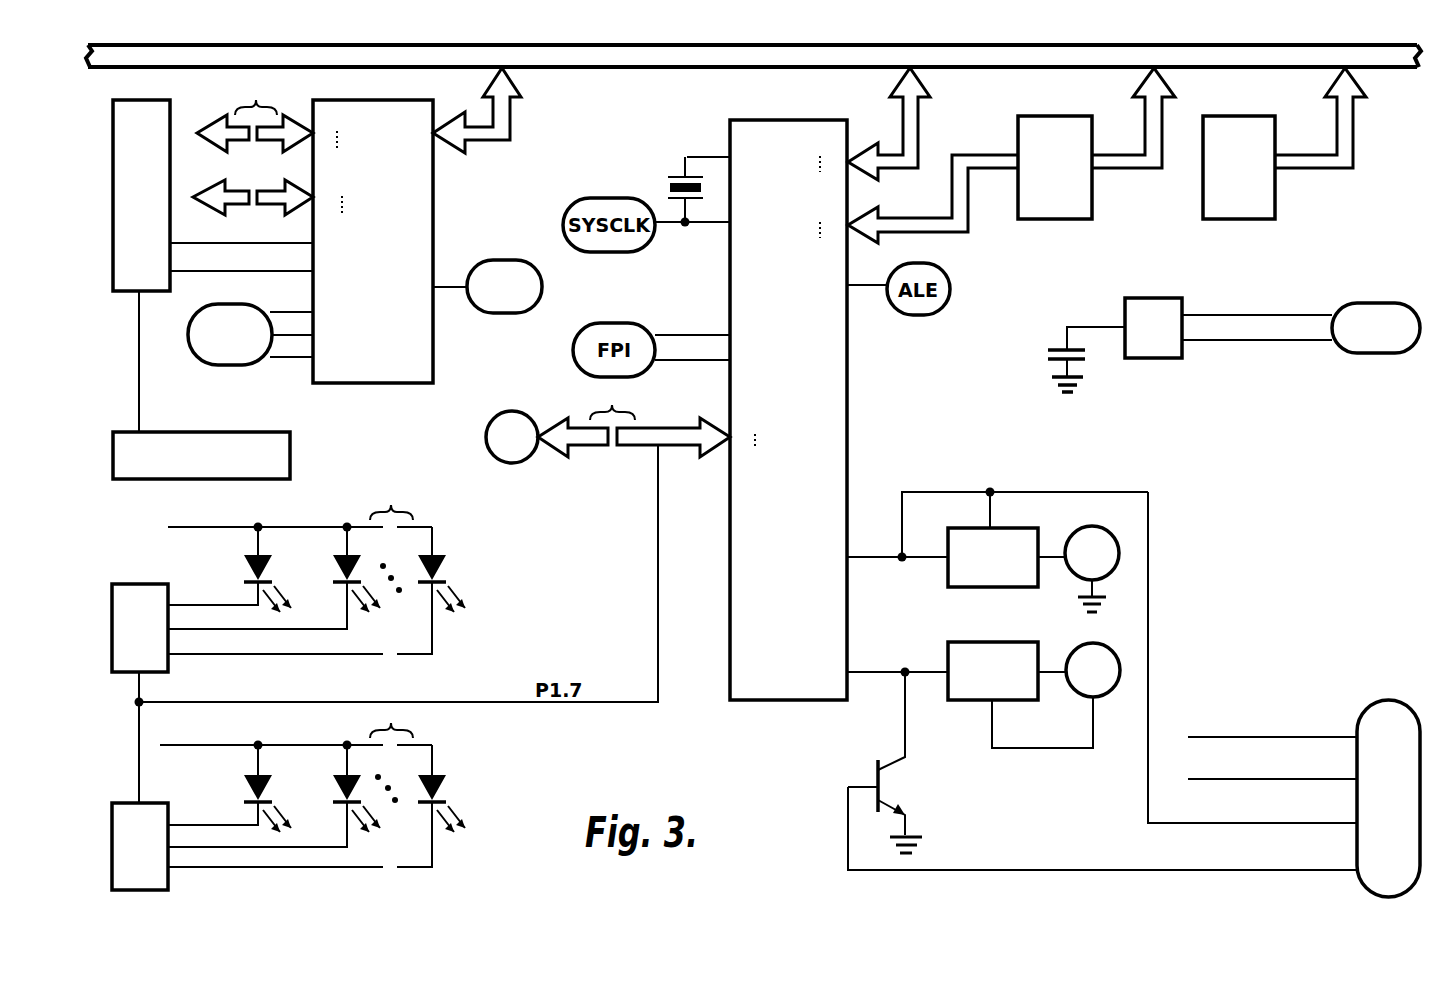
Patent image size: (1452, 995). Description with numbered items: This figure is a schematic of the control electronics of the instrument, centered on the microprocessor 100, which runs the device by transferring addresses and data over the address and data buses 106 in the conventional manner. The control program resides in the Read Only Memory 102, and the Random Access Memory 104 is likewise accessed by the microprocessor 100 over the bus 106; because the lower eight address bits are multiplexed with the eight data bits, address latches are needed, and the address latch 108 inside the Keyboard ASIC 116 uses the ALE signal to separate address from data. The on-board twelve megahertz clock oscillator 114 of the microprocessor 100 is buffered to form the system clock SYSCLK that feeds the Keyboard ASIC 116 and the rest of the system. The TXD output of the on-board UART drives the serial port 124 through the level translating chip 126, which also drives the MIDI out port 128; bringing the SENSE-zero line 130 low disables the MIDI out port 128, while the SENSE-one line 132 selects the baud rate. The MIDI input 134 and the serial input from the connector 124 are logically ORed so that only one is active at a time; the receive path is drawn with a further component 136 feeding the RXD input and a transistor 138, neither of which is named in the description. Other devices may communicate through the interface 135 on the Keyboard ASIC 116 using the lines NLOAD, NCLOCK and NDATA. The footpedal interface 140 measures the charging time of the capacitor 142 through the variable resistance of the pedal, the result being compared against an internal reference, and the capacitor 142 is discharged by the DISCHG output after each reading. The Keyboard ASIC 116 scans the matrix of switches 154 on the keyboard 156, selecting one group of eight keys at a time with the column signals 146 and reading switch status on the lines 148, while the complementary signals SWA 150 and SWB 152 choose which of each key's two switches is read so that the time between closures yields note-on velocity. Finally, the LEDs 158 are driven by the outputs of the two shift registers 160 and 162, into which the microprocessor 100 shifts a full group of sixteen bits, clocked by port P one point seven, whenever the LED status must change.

The microprocessor 100 is at (773, 512).
The Read Only Memory (ROM) 102 is at (1222, 180).
The Random Access Memory (RAM) 104 is at (1038, 180).
The address and data buses 106 is at (636, 72).
The address latch 108 is at (450, 288).
The clock oscillator 114 is at (668, 176).
The Keyboard ASIC 116 is at (368, 145).
The RS-232 port 124 is at (1371, 813).
The level translating chip 126 is at (976, 570).
The MIDI out port 128 is at (1078, 569).
The SENSE_0 line 130 is at (1322, 736).
The SENSE_1 line 132 is at (1313, 781).
The MIDI input 134 is at (1076, 683).
The interface 135 is at (213, 348).
The receive line driver 136 is at (976, 685).
The transistor 138 is at (874, 772).
The footpedal interface 140 is at (1136, 340).
The capacitor 142 is at (1050, 360).
The column select signals COL0 to COL7 146 is at (240, 205).
The switch status lines SW0 to SW7 148 is at (280, 143).
The SWA signal 150 is at (232, 243).
The SWB signal 152 is at (262, 272).
The matrix of switches 154 is at (122, 208).
The keyboard 156 is at (184, 463).
The LEDs 158 is at (446, 546).
The shift register 160 is at (122, 635).
The shift register 162 is at (122, 852).